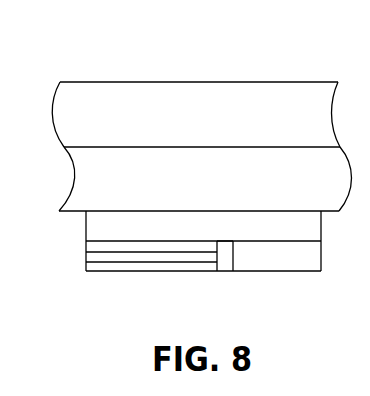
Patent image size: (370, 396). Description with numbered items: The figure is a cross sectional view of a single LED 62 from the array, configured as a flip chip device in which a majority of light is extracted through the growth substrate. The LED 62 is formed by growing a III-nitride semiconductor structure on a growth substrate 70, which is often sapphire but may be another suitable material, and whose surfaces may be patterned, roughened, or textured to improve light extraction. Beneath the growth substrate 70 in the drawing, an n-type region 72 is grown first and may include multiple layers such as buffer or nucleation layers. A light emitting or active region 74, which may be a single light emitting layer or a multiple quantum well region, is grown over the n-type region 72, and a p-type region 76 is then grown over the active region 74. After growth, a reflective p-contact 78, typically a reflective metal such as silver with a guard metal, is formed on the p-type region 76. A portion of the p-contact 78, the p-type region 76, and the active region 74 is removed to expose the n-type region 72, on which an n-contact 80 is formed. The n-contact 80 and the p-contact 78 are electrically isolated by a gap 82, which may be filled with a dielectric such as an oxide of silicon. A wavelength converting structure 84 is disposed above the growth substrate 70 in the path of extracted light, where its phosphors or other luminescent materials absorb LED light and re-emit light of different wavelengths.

The LED 62 is at (191, 167).
The wavelength converting structure 84 is at (212, 127).
The growth substrate 70 is at (212, 191).
The n-type region 72 is at (86, 223).
The light emitting or active region 74 is at (86, 247).
The p-type region 76 is at (86, 258).
The reflective p-contact 78 is at (158, 268).
The n-contact 80 is at (277, 266).
The gap 82 is at (224, 266).